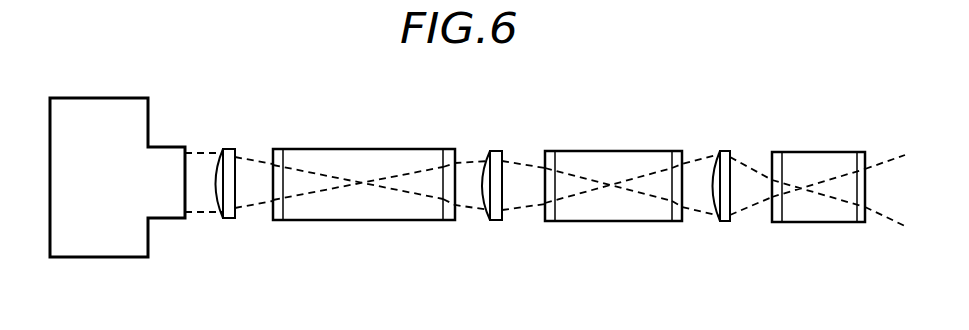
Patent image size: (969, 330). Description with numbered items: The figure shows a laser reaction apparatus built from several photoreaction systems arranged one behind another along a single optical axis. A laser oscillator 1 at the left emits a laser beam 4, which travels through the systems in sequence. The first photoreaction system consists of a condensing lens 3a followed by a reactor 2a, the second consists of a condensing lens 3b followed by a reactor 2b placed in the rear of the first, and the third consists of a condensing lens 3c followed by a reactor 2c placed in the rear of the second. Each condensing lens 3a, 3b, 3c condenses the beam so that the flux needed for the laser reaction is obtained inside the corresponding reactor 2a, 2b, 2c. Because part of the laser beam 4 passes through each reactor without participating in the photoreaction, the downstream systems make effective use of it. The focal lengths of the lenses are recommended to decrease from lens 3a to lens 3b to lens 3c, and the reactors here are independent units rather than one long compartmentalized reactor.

The laser oscillator 1 is at (117, 102).
The laser beam 4 is at (198, 150).
The condensing lens 3a is at (230, 218).
The condensing lens 3b is at (490, 218).
The condensing lens 3c is at (722, 219).
The reactor 2a is at (373, 221).
The reactor 2b is at (628, 222).
The reactor 2c is at (828, 223).